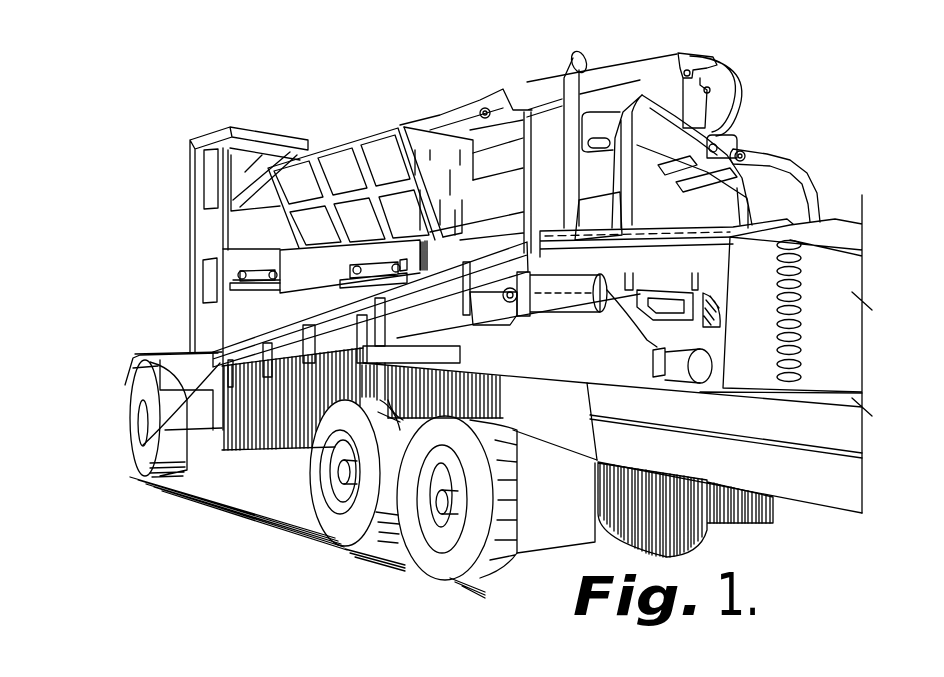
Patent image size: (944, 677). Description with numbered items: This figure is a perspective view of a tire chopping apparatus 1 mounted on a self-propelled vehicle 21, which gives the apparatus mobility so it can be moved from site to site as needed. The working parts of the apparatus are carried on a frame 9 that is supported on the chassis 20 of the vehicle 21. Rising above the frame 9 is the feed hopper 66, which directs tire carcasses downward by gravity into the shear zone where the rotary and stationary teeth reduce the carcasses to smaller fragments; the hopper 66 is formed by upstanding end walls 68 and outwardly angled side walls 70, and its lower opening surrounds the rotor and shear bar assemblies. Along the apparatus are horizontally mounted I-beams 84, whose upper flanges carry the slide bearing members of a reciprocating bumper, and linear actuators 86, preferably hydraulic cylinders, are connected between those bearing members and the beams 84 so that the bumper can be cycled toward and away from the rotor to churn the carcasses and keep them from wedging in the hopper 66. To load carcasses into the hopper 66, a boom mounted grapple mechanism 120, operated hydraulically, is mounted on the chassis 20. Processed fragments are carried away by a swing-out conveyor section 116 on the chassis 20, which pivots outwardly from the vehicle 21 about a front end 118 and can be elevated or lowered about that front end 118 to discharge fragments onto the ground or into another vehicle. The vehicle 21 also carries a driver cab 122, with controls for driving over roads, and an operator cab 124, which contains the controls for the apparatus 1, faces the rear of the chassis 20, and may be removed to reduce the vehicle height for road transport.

The tire chopping apparatus 1 is at (350, 133).
The frame 9 is at (295, 308).
The chassis 20 is at (833, 487).
The self-propelled vehicle 21 is at (122, 369).
The feed hopper 66 is at (408, 127).
The end walls 68 is at (417, 138).
The side walls 70 is at (310, 220).
The I-beams 84 is at (383, 267).
The linear actuators 86 is at (222, 297).
The swing-out conveyor section 116 is at (575, 298).
The front end 118 is at (143, 443).
The boom mounted grapple mechanism 120 is at (777, 156).
The driver cab 122 is at (208, 333).
The operator cab 124 is at (207, 233).